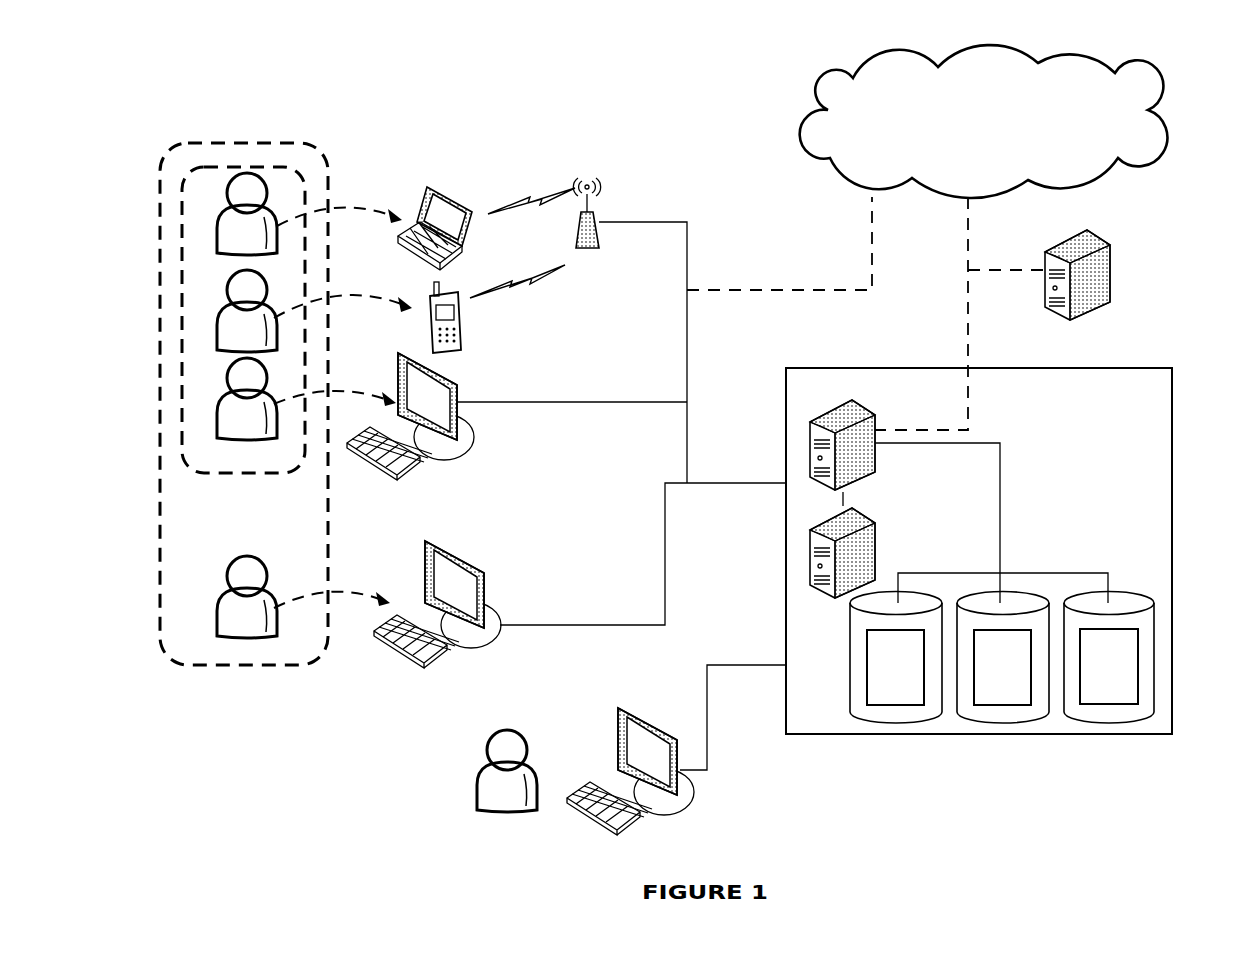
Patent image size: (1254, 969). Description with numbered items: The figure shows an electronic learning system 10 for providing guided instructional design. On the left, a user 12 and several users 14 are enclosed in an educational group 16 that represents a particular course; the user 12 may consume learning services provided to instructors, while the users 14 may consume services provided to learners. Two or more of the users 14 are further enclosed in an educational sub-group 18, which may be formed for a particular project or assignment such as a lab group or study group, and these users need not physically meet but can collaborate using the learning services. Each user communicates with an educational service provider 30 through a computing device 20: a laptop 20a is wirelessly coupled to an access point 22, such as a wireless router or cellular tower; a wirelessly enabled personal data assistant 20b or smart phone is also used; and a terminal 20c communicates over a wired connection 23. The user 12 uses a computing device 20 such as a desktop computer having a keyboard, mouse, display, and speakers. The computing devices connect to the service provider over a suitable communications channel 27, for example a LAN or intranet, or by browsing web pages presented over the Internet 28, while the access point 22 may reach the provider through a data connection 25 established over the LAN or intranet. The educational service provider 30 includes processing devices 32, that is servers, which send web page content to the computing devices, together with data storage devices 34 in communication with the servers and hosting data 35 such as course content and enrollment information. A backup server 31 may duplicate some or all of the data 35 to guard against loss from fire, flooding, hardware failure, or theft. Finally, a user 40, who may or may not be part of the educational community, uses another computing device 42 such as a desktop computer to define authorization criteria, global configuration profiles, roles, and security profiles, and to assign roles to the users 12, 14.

The system 10 is at (192, 108).
The user 12 is at (220, 602).
The users 14 is at (220, 210).
The educational group 16 is at (158, 490).
The educational sub-group 18 is at (278, 167).
The computing device 20 is at (487, 598).
The laptop 20a is at (450, 210).
The personal data assistant (PDA) 20b is at (463, 348).
The terminal 20c is at (470, 440).
The access point 22 is at (590, 250).
The wired connection 23 is at (572, 402).
The data connection 25 is at (757, 483).
The communications channel 27 is at (801, 290).
The Internet 28 is at (815, 86).
The educational service provider 30 is at (806, 368).
The backup server 31 is at (1090, 232).
The processing device 32 is at (858, 404).
The data storage device 34 is at (1013, 598).
The data 35 is at (1138, 665).
The user 40 is at (482, 764).
The computing device 42 is at (692, 790).